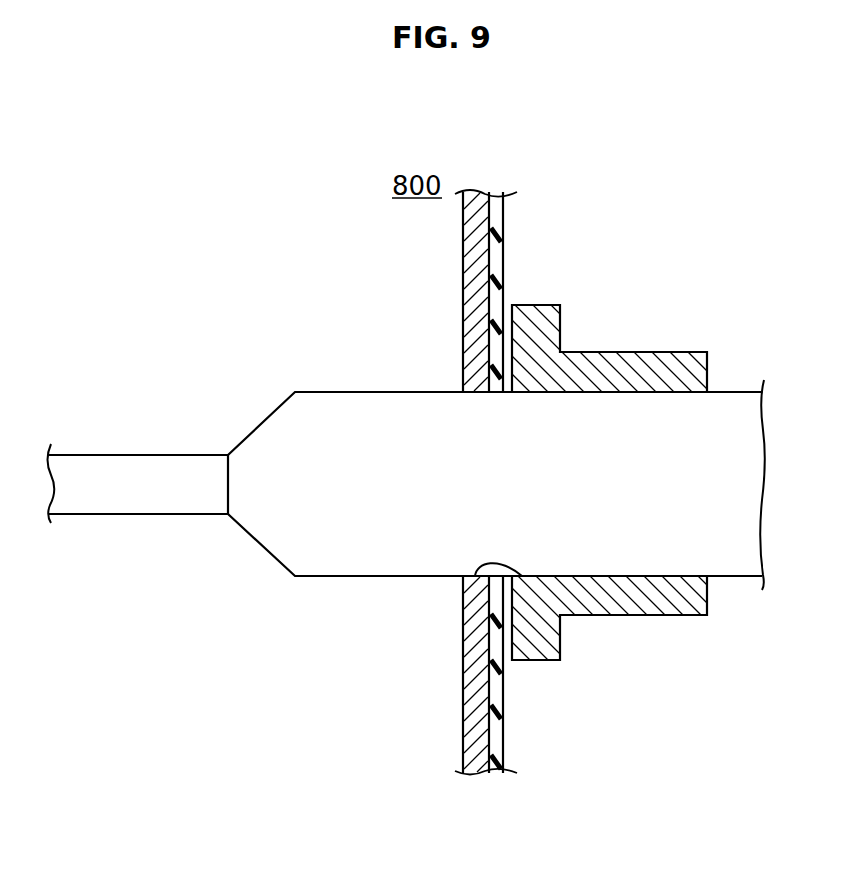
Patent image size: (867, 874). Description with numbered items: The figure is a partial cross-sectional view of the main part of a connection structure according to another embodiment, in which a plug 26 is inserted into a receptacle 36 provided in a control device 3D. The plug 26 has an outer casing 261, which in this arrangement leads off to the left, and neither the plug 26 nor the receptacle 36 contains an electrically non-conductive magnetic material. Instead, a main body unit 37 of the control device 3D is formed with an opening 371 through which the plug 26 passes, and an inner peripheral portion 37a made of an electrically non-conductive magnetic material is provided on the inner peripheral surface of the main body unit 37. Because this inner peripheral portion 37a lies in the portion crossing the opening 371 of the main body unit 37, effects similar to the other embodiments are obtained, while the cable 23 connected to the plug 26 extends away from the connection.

The tube 23 is at (133, 452).
The plug 26 is at (376, 389).
The outer casing 261 is at (348, 543).
The main body unit 37 is at (505, 269).
The inner peripheral portion 37a is at (495, 742).
The receptacle 36 is at (612, 352).
The control device 3D is at (682, 252).
The opening 371 is at (519, 575).